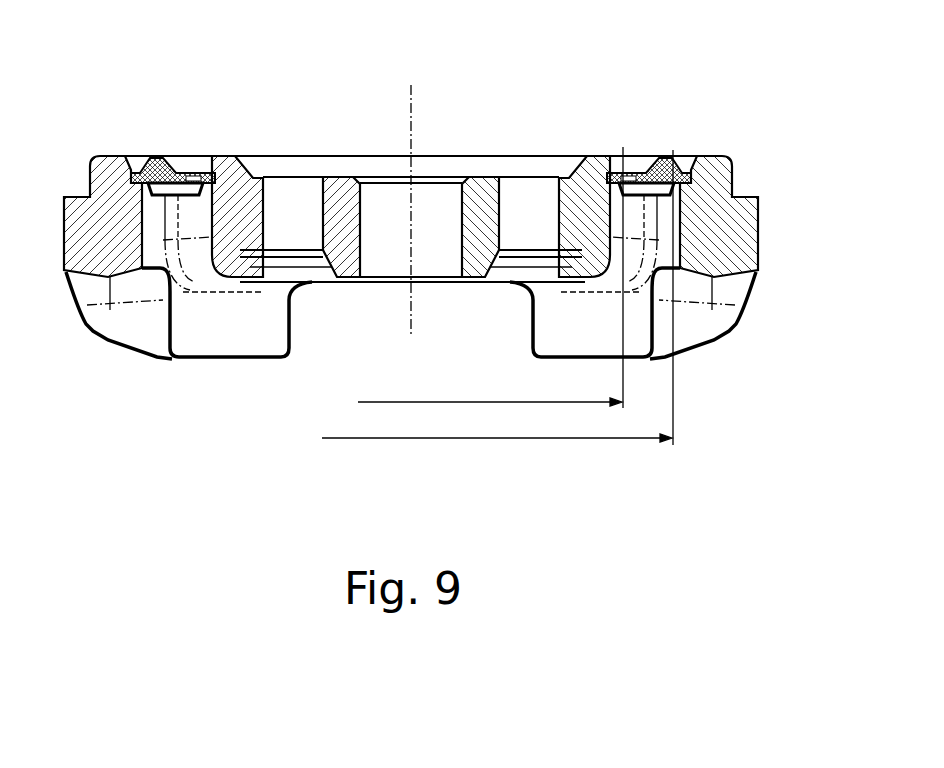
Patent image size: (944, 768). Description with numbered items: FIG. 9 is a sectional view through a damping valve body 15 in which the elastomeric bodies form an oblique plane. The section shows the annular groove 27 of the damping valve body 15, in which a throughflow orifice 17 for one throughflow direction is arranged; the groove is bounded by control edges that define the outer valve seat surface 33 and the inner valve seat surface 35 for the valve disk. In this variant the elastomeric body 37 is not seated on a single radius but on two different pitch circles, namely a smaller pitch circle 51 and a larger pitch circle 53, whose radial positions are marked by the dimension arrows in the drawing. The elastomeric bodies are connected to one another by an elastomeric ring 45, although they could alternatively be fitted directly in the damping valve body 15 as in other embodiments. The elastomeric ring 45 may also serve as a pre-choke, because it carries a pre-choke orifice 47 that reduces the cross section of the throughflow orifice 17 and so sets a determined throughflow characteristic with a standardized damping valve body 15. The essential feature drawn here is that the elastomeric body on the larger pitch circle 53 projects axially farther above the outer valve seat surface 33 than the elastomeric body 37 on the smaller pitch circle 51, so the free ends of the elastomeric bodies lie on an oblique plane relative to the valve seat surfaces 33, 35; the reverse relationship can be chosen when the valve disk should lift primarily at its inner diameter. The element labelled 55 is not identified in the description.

The damping valve body 15 is at (727, 245).
The throughflow orifice 17 is at (158, 230).
The annular groove 27 is at (648, 168).
The outer valve seat surface 33 is at (110, 157).
The inner valve seat surface 35 is at (227, 157).
The elastomeric body 37 is at (155, 157).
The elastomeric ring 45 is at (662, 158).
The pre-choke orifice 47 is at (190, 168).
The smaller pitch circle 51 is at (490, 277).
The larger pitch circle 53 is at (497, 297).
The cover plate 55 is at (425, 170).